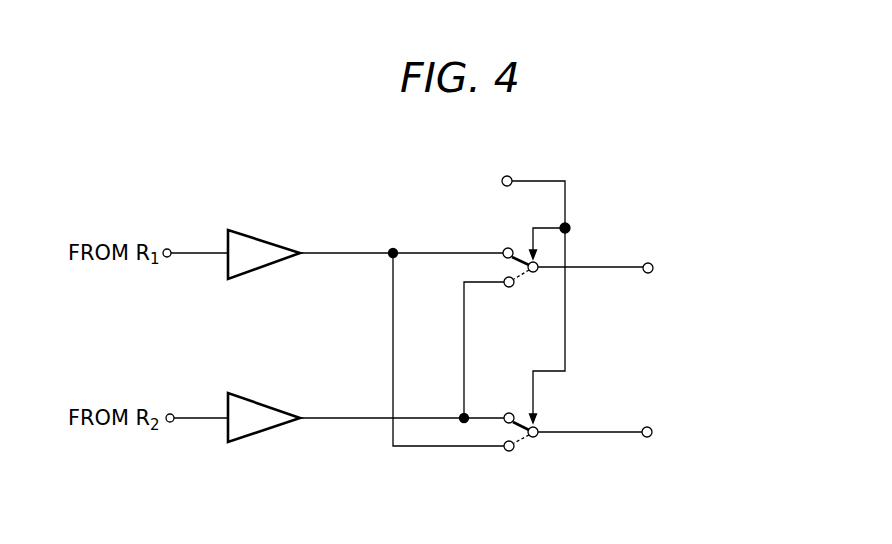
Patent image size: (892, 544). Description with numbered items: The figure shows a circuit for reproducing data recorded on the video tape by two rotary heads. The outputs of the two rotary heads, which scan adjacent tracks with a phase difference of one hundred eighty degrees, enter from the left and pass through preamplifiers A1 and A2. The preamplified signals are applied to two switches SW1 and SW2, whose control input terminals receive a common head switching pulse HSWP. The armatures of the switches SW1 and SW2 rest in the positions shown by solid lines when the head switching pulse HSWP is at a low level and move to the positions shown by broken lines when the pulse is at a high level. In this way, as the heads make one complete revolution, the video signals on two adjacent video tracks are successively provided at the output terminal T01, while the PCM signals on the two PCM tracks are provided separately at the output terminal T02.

The preamplifier A1 is at (266, 240).
The preamplifier A2 is at (268, 405).
The switch SW1 is at (521, 253).
The switch SW2 is at (523, 420).
The output terminal T01 is at (645, 273).
The output terminal T02 is at (645, 440).
The head switching pulse HSWP is at (501, 296).